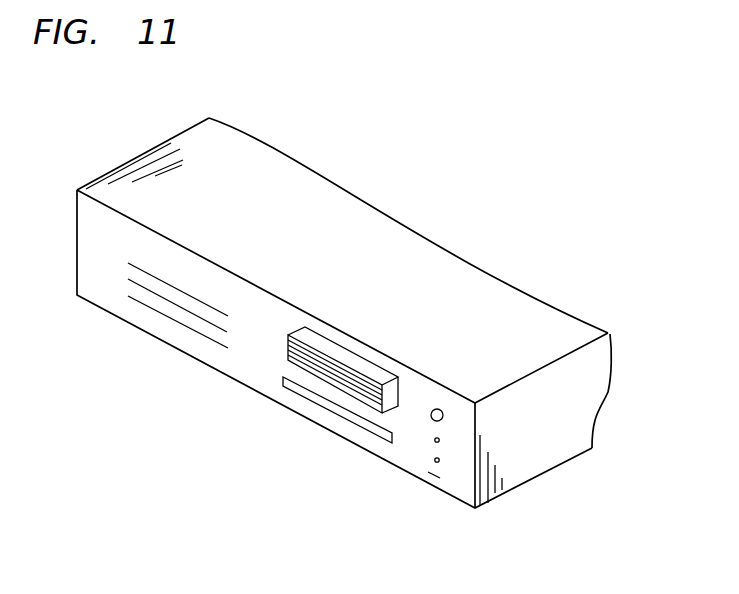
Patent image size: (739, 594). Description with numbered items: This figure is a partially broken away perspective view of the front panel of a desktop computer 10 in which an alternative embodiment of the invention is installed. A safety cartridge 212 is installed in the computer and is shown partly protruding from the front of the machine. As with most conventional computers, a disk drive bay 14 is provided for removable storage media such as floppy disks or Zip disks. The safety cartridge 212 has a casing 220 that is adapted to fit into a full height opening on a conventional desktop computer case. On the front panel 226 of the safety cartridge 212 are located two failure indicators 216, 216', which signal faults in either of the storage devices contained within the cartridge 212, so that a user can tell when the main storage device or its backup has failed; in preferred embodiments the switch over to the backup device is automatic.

The desktop computer 10 is at (468, 498).
The disk drive bay 14 is at (302, 389).
The safety cartridge 212 is at (401, 402).
The failure indicator 216 is at (373, 463).
The failure indicator 216' is at (376, 489).
The casing 220 is at (325, 346).
The front panel 226 is at (433, 477).